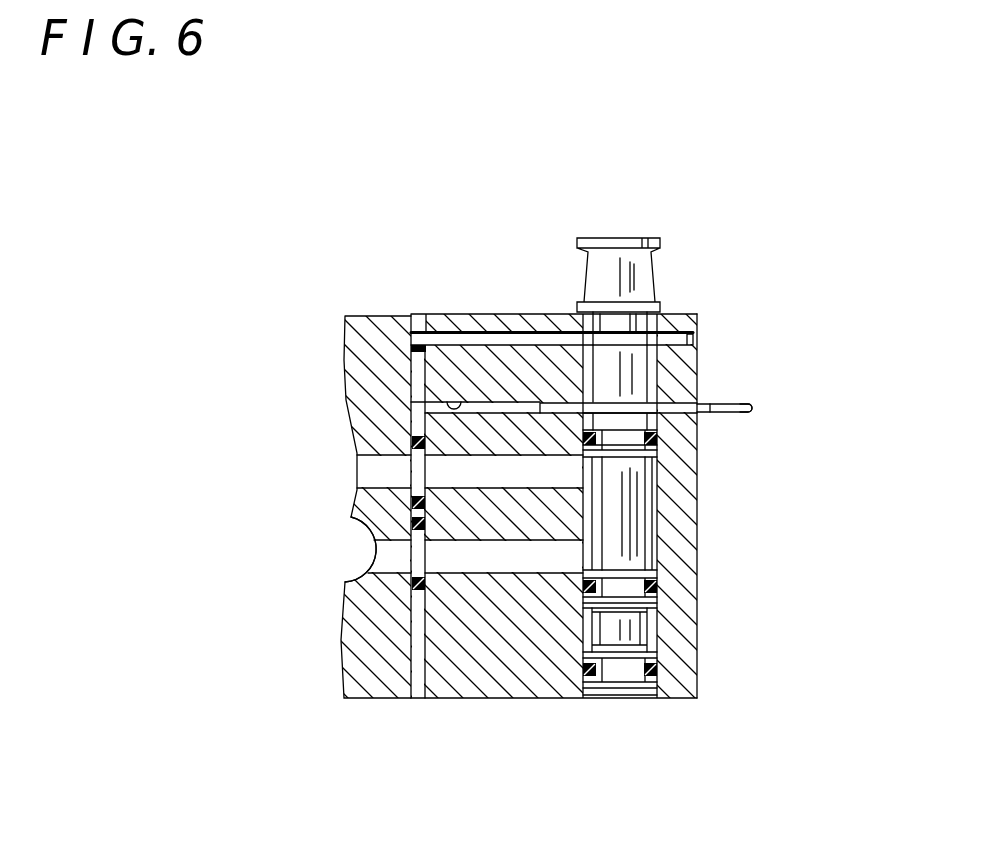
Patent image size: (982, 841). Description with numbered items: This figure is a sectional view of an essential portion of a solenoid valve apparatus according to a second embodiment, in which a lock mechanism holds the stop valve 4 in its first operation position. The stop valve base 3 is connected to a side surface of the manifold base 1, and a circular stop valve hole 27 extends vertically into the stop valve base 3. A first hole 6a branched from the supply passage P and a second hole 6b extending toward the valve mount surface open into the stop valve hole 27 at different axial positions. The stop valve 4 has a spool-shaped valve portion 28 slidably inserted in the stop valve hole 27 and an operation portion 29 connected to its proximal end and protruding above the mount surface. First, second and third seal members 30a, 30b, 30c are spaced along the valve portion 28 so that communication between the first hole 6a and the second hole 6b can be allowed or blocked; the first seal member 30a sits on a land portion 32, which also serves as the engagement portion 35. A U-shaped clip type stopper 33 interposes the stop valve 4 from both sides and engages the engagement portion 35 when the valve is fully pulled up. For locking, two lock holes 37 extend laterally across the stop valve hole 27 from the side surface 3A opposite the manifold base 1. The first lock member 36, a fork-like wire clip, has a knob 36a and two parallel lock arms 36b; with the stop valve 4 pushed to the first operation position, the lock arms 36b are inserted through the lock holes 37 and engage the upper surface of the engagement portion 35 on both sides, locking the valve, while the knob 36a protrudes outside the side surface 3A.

The manifold base 1 is at (372, 683).
The stop valve base 3 is at (487, 662).
The side surface 3A is at (690, 658).
The stop valve 4 is at (645, 211).
The first hole 6a is at (467, 555).
The second hole 6b is at (365, 472).
The supply passage P is at (355, 543).
The stop valve hole 27 is at (603, 610).
The valve portion 28 is at (658, 546).
The operation portion 29 is at (640, 278).
The first seal member 30a is at (658, 445).
The second seal member 30b is at (658, 591).
The third seal member 30c is at (658, 675).
The land portion 32 is at (623, 457).
The stopper 33 is at (476, 330).
The engagement portion 35 is at (672, 393).
The first lock member 36 is at (774, 391).
The knob 36a is at (731, 414).
The lock arm 36b is at (553, 398).
The lock hole 37 is at (448, 402).